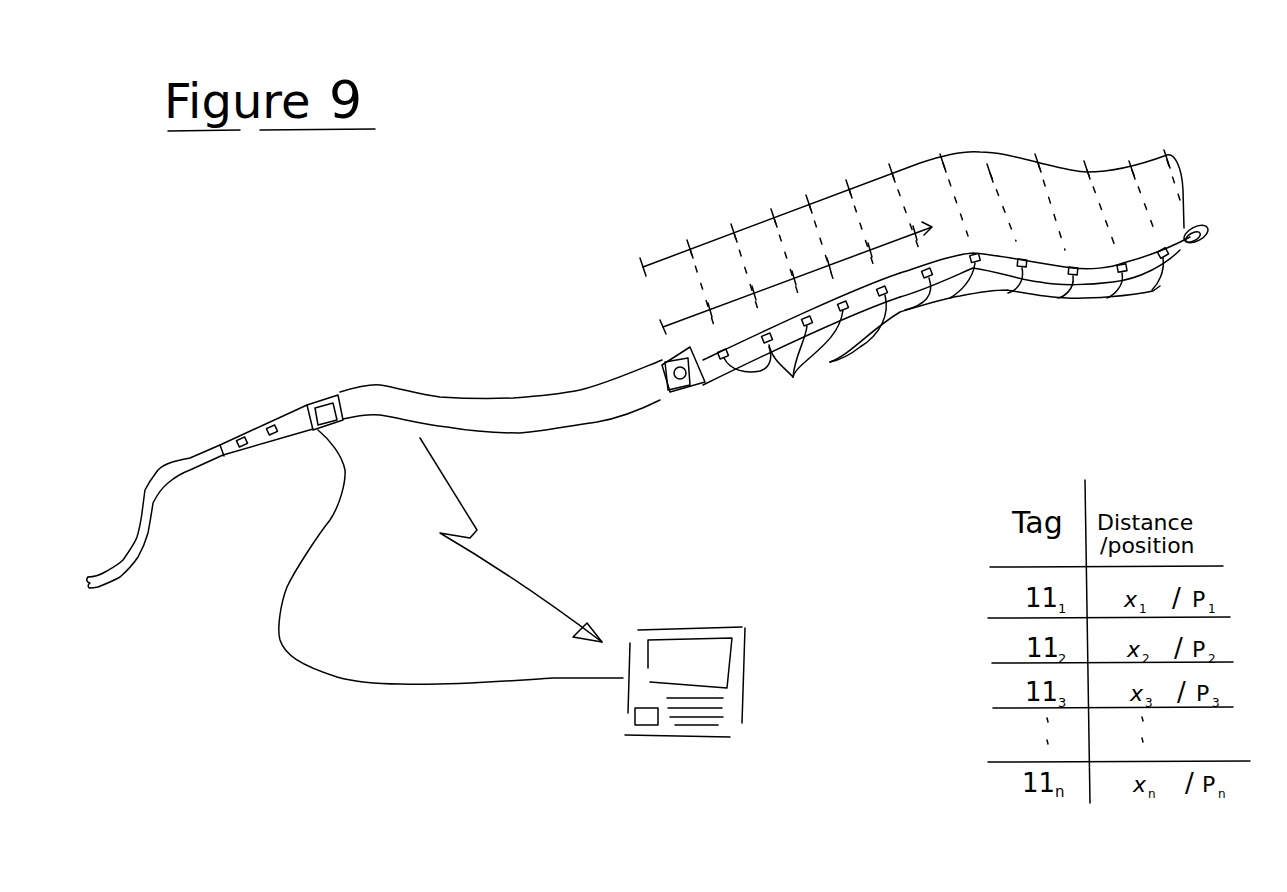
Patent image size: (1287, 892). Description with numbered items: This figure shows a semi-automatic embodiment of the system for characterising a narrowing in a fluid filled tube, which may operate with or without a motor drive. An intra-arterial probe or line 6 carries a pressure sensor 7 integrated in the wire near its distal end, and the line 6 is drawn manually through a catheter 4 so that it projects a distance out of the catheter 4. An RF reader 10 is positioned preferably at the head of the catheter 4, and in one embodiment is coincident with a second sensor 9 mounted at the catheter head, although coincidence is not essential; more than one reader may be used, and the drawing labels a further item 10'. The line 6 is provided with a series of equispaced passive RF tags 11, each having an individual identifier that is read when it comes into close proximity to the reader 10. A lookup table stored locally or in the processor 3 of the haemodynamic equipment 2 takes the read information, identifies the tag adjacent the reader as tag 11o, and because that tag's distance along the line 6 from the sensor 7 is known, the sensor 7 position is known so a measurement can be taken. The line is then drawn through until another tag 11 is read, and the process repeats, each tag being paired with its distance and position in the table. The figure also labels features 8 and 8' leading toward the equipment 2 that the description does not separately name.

The haemodynamic equipment 2 is at (742, 680).
The processor 3 is at (633, 717).
The catheter 4 is at (515, 435).
The intra-arterial probe 6 is at (1003, 250).
The pressure sensor 7 is at (1195, 190).
The connection line 8 is at (451, 557).
The wireless connection 8' is at (500, 540).
The second sensor 9 is at (683, 380).
The RF reader 10 is at (659, 440).
The second reader 10' is at (346, 383).
The RF tags 11 is at (267, 423).
The tag at the reader 11o is at (690, 378).